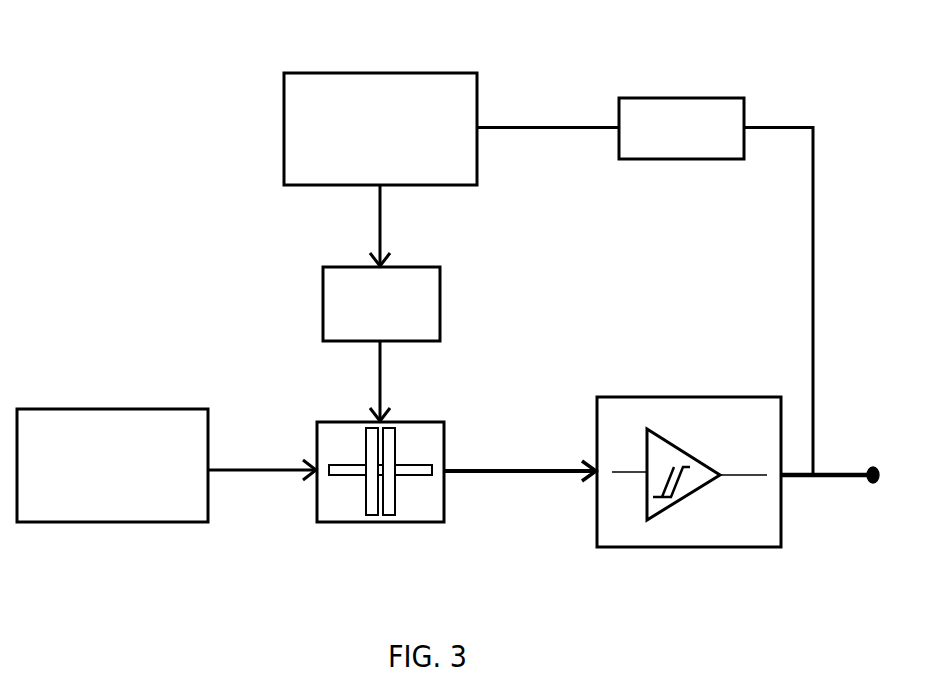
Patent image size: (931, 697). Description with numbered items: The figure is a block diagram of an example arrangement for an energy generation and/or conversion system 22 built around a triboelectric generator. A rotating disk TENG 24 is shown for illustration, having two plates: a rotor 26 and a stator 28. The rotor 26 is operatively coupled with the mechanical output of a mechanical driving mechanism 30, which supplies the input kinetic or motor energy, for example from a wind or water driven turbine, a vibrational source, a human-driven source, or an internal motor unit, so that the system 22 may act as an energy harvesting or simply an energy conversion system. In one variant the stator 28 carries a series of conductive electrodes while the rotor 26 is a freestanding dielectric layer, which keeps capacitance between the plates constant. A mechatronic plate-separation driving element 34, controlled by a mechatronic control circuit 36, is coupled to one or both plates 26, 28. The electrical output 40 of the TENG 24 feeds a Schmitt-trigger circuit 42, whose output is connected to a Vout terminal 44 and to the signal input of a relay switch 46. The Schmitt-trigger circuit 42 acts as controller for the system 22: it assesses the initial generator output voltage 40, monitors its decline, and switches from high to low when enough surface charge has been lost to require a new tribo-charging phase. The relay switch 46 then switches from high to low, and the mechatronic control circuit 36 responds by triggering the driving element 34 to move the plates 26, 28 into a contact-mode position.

The system 22 is at (161, 206).
The triboelectric nanogenerator 24 is at (335, 522).
The rotor 26 is at (366, 435).
The stator 28 is at (395, 507).
The mechanical driving mechanism 30 is at (123, 409).
The mechatronic plate-separation driving element 34 is at (323, 287).
The mechatronic control circuit 36 is at (284, 88).
The electrical output 40 is at (529, 468).
The Schmitt-trigger circuit 42 is at (781, 532).
The Vout terminal 44 is at (872, 466).
The relay switch 46 is at (692, 98).